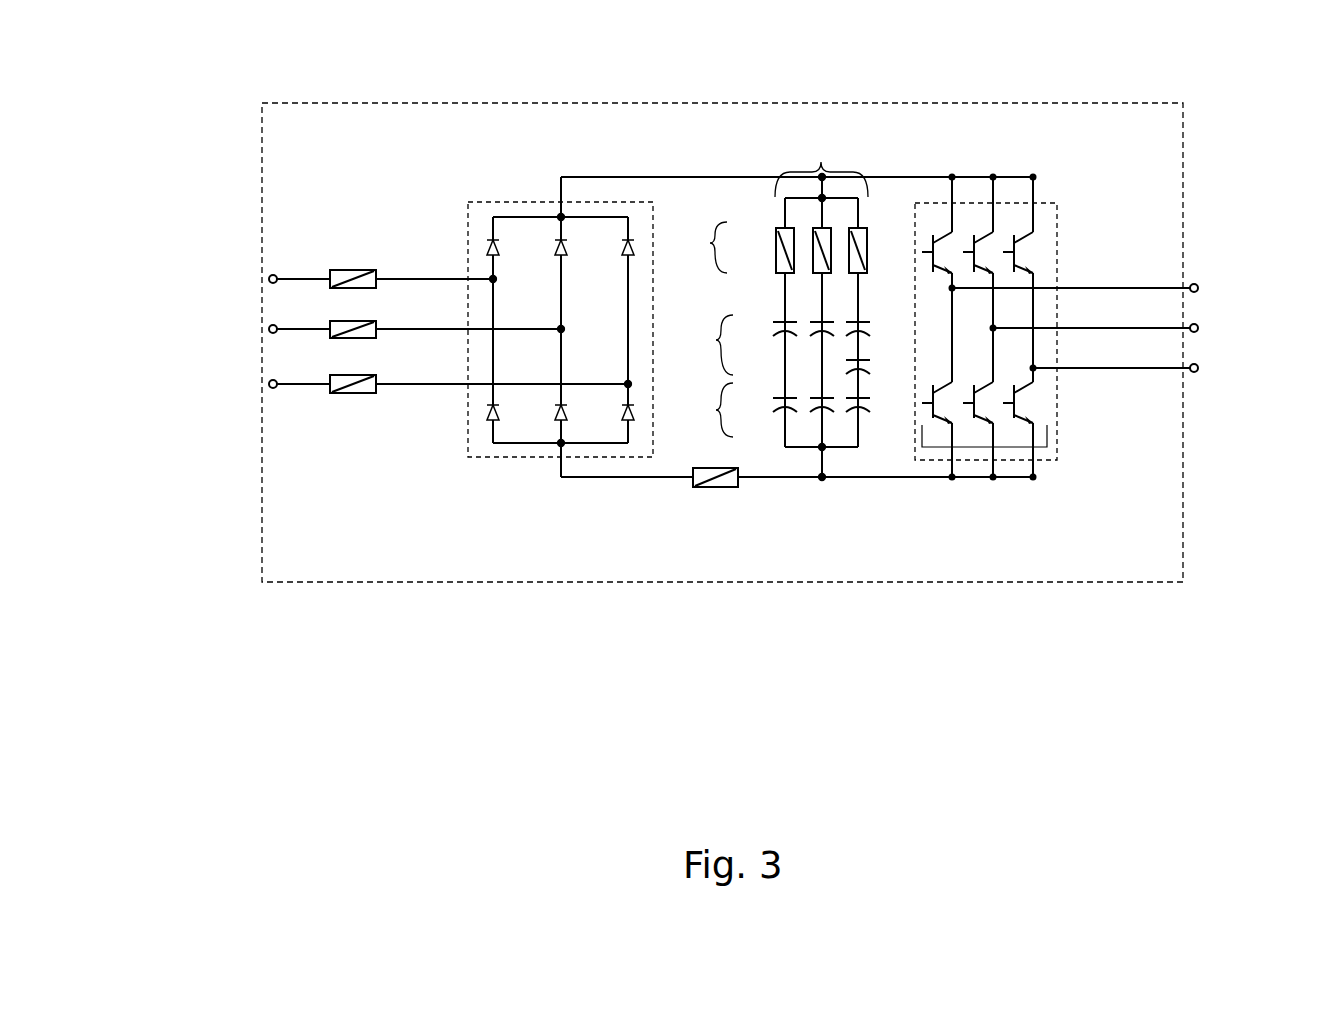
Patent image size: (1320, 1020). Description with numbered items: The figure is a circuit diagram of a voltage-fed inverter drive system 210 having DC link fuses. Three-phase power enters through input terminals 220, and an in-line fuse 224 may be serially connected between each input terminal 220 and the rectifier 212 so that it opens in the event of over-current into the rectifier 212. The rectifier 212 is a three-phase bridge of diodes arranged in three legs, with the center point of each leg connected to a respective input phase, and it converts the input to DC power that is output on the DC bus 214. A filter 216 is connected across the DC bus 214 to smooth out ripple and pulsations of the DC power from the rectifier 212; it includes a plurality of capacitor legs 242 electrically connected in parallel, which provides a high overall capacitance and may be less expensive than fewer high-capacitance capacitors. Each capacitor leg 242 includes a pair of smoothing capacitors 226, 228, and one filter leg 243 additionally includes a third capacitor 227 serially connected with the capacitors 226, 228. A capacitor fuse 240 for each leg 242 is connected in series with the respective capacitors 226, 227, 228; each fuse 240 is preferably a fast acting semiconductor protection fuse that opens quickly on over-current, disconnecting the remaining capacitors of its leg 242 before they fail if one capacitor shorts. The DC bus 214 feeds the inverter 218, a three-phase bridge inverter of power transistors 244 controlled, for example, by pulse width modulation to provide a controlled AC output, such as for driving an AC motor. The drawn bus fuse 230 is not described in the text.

The voltage-fed inverter drive system 210 is at (1203, 190).
The rectifier 212 is at (512, 200).
The DC bus 214 is at (908, 180).
The filter 216 is at (755, 205).
The inverter 218 is at (1046, 200).
The input terminals 220 is at (210, 331).
The in-line fuse 224 is at (330, 378).
The smoothing capacitor 226 is at (716, 340).
The third capacitor 227 is at (872, 377).
The smoothing capacitor 228 is at (716, 410).
The bus fuse Fbus 230 is at (693, 478).
The capacitor fuse 240 is at (710, 243).
The capacitor legs 242 is at (821, 162).
The filter leg 243 is at (858, 198).
The power transistors 244 is at (1042, 448).